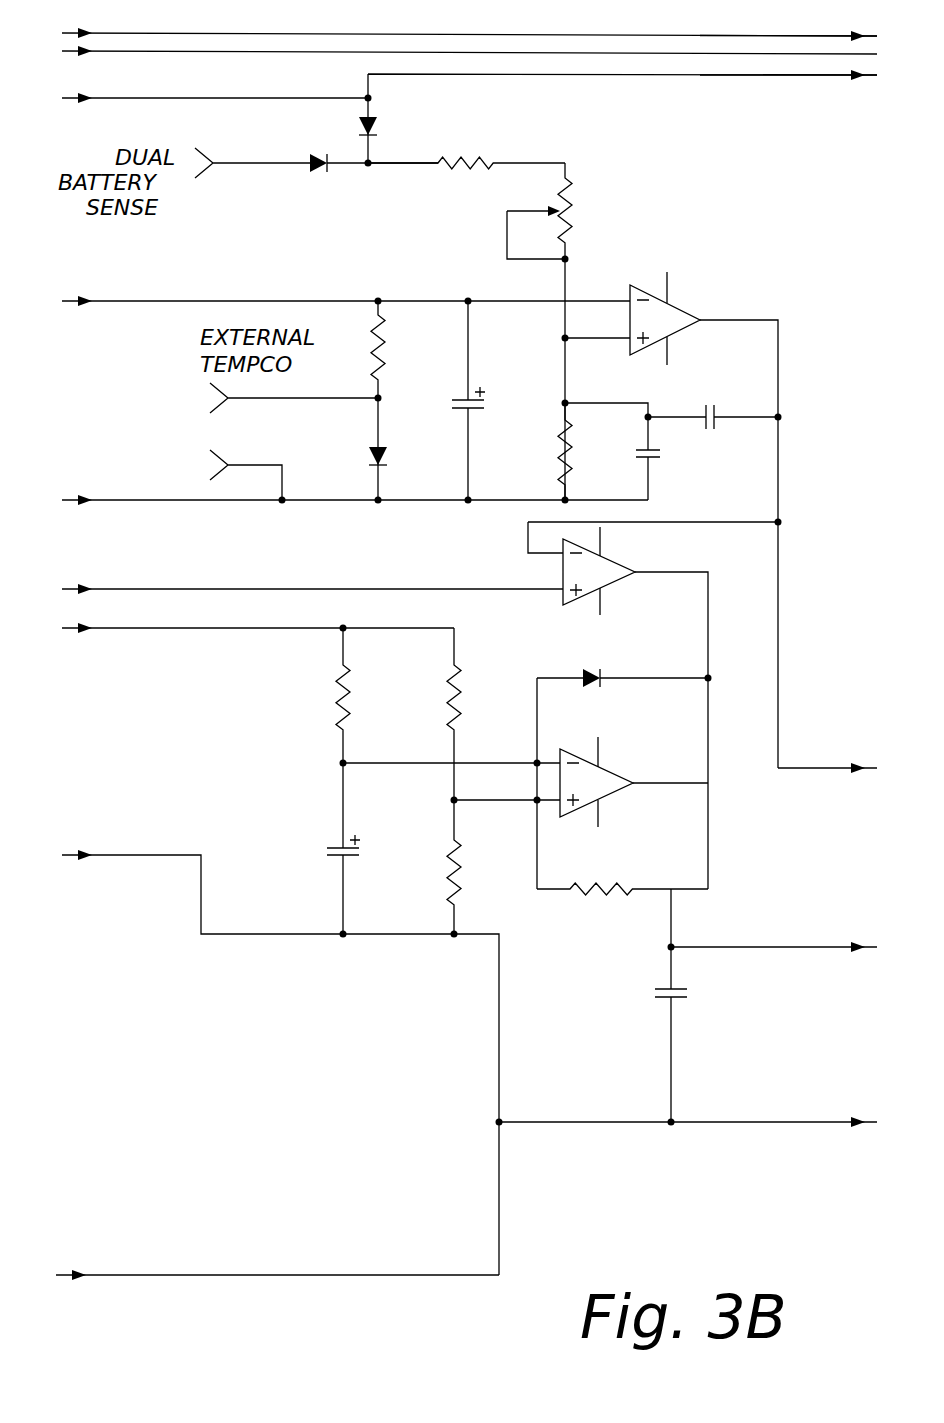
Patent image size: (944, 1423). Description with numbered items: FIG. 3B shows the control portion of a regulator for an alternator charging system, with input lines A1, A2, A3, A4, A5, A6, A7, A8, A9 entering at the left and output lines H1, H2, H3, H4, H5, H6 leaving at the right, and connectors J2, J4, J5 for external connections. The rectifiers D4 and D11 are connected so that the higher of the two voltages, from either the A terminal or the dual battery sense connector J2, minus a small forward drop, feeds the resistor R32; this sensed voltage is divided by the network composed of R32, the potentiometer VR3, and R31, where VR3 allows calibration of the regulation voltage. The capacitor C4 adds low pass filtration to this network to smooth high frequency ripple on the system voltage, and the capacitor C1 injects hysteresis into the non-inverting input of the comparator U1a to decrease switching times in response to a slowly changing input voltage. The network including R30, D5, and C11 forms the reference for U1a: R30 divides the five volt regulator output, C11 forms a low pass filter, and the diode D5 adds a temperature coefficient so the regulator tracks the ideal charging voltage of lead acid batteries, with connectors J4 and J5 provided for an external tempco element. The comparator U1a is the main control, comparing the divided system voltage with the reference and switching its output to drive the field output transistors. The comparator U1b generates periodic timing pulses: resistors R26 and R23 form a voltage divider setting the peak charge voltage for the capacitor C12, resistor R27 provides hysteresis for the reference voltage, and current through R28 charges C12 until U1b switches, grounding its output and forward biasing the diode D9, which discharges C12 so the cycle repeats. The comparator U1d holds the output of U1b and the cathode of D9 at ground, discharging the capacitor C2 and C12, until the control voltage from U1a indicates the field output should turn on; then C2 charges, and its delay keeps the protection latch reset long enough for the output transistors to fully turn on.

The input line A1 is at (118, 33).
The input line A2 is at (110, 51).
The input line A3 is at (110, 98).
The input line A4 is at (118, 301).
The input line A5 is at (110, 500).
The input line A6 is at (118, 589).
The input line A7 is at (118, 628).
The input line A8 is at (110, 855).
The input line A9 is at (110, 1275).
The output line H1 is at (821, 35).
The output line H2 is at (763, 54).
The output line H3 is at (828, 76).
The output line H4 is at (837, 768).
The output line H5 is at (815, 947).
The output line H6 is at (807, 1122).
The J2 terminal J2 is at (252, 155).
The external tempco connector J4 is at (296, 407).
The external tempco connector J5 is at (248, 471).
The rectifier D4 is at (391, 132).
The diode D5 is at (354, 451).
The diode D9 is at (624, 767).
The rectifier D11 is at (364, 179).
The resistor R23 is at (477, 864).
The resistor R26 is at (480, 714).
The resistor R27 is at (622, 904).
The resistor R28 is at (314, 697).
The resistor R30 is at (386, 337).
The resistor R31 is at (539, 451).
The resistor R32 is at (466, 179).
The potentiometer VR3 is at (569, 210).
The capacitor C1 is at (713, 404).
The capacitor C2 is at (687, 1007).
The capacitor C4 is at (627, 451).
The capacitor C11 is at (486, 401).
The capacitor C12 is at (322, 850).
The comparator U1a is at (680, 503).
The comparator U1b is at (634, 783).
The comparator U1d is at (637, 705).